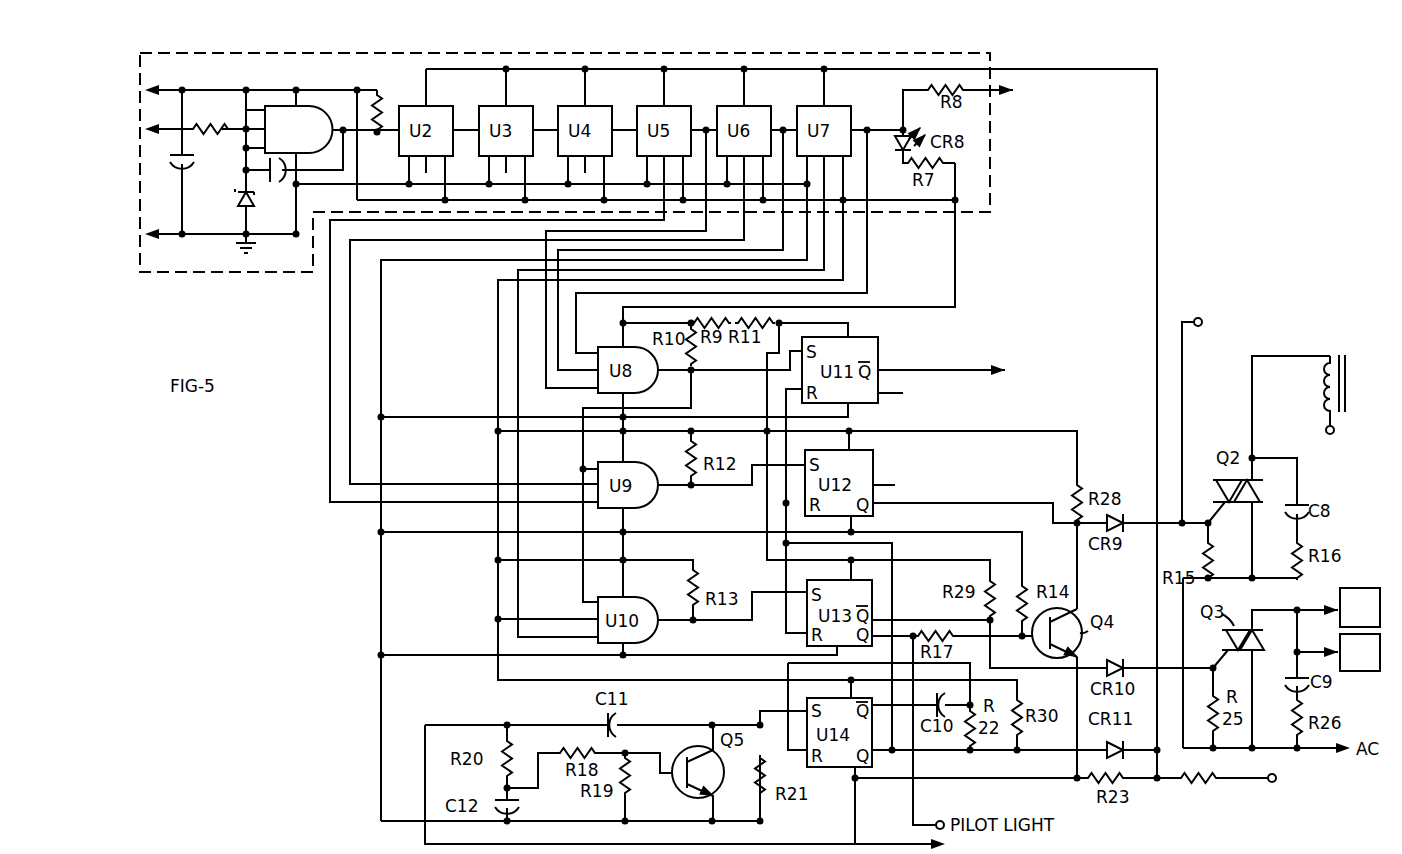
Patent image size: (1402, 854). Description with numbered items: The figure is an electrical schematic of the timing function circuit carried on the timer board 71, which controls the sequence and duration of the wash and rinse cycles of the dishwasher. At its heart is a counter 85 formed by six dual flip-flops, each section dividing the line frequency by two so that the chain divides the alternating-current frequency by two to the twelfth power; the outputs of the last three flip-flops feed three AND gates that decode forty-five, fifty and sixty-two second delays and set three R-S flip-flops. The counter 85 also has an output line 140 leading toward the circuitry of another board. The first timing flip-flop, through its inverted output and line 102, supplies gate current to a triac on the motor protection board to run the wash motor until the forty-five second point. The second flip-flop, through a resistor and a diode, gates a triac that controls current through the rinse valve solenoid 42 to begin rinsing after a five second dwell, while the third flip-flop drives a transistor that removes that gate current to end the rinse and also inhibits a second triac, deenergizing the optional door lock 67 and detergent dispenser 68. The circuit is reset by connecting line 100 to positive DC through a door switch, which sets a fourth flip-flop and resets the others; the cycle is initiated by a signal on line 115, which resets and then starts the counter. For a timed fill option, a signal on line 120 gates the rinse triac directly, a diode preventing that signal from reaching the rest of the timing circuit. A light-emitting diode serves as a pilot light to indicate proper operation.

The counter 85 is at (235, 281).
The output line to FIG. 6 140 is at (1000, 96).
The line 102 is at (938, 364).
The line 120 is at (1187, 318).
The rinse valve solenoid 42 is at (1350, 396).
The door lock 67 is at (1337, 607).
The detergent dispenser 68 is at (1337, 652).
The line 115 is at (1233, 790).
The line 100 is at (413, 829).
The timer board 71 is at (255, 562).